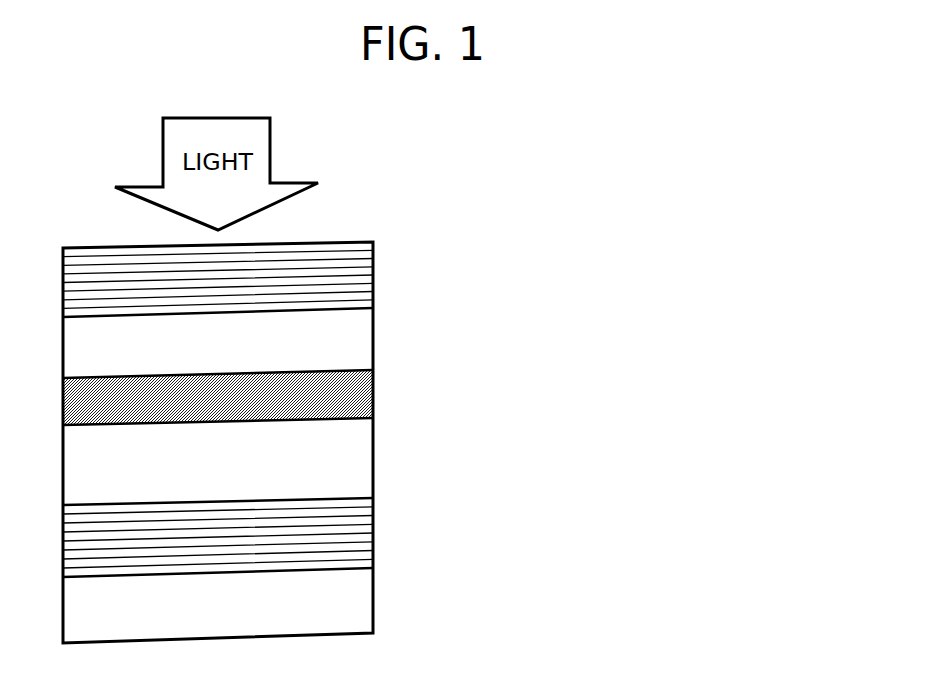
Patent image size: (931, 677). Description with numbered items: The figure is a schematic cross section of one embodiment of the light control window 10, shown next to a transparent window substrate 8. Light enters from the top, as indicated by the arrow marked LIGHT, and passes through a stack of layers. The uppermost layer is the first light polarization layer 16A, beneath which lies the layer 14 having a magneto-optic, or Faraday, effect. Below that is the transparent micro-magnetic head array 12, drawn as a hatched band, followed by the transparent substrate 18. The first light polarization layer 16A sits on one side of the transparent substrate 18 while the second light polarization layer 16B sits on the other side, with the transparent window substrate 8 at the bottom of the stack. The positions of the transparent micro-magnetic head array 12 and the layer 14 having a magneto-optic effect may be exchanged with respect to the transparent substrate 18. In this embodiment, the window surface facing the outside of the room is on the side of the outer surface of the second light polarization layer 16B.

The light control window 10 is at (73, 218).
The first light polarization layer 16A is at (357, 277).
The layer having a magneto-optic effect 14 is at (358, 343).
The transparent micro-magnetic head array 12 is at (358, 397).
The transparent substrate 18 is at (358, 462).
The second light polarization layer 16B is at (358, 538).
The transparent window substrate 8 is at (361, 596).